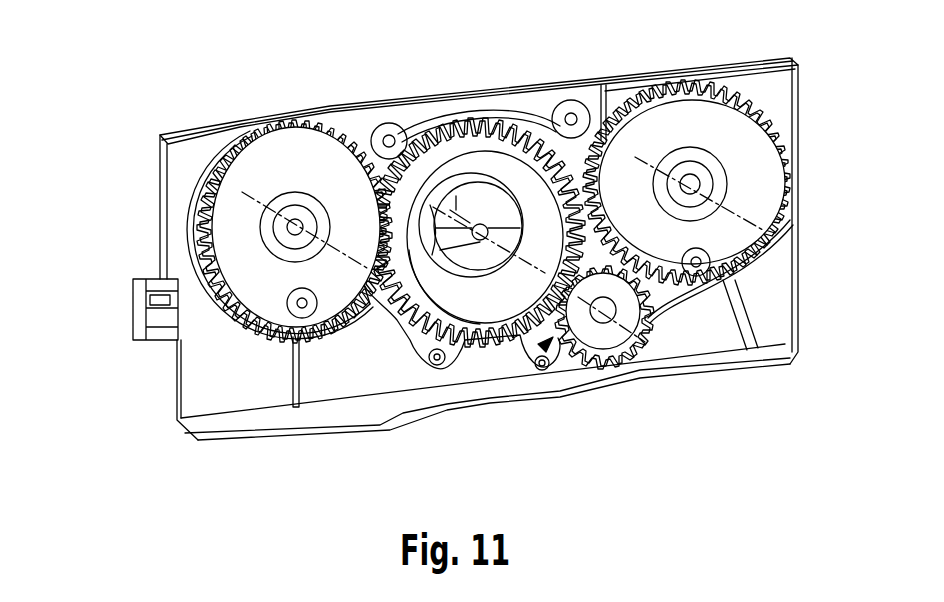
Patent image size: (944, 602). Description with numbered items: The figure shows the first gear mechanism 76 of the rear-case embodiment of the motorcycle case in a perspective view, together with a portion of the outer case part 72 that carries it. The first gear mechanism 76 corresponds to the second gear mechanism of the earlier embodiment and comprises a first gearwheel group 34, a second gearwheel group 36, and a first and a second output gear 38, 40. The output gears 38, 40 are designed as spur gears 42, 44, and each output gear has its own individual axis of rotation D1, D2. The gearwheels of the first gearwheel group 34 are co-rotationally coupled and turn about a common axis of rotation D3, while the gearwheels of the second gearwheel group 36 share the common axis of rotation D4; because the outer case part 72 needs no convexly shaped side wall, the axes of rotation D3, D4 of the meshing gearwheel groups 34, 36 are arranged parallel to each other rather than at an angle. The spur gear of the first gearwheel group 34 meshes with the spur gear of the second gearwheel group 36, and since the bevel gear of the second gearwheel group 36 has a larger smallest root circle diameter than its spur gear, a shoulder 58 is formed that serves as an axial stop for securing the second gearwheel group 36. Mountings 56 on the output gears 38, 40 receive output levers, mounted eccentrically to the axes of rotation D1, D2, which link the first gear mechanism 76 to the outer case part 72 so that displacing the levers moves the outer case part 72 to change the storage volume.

The first gear mechanism 76 is at (120, 111).
The outer case part 72 is at (213, 400).
The first output gear 38 is at (294, 187).
The spur gear 42 is at (331, 163).
The first gearwheel group 34 is at (507, 163).
The second gearwheel group 36 is at (598, 327).
The second output gear 40 is at (686, 142).
The spur gear 44 is at (708, 125).
The mountings 56 is at (287, 303).
The shoulder 58 is at (548, 342).
The axis of rotation D1 is at (257, 197).
The axis of rotation D2 is at (722, 199).
The axis of rotation D3 is at (475, 228).
The axis of rotation D4 is at (670, 350).